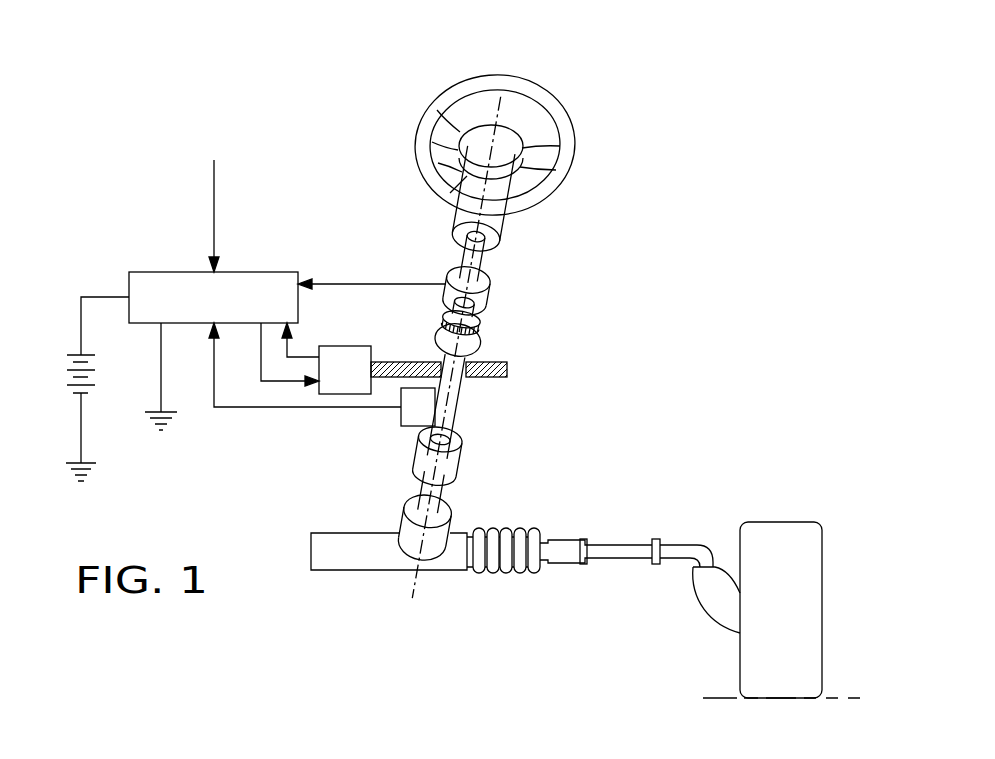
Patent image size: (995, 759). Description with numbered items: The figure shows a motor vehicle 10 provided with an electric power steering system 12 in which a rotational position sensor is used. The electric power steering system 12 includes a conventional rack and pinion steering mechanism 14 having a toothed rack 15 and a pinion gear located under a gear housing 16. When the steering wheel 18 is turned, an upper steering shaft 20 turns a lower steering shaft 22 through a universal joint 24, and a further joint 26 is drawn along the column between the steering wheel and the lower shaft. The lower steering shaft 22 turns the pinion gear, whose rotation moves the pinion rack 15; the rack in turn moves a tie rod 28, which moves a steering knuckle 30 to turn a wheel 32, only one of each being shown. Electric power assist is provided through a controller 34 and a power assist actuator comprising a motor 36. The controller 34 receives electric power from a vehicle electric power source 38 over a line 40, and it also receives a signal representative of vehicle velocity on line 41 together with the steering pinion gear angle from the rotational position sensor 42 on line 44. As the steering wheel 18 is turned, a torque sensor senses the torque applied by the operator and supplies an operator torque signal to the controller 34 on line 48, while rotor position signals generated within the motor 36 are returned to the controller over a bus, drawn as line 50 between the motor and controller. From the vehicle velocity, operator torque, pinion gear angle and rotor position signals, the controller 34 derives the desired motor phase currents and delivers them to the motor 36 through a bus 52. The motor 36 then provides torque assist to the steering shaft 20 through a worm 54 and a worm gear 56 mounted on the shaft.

The motor vehicle 10 is at (743, 360).
The electric power steering system 12 is at (656, 264).
The rack and pinion steering mechanism 14 is at (530, 525).
The toothed rack 15 is at (330, 558).
The gear housing 16 is at (405, 517).
The steering wheel 18 is at (543, 100).
The upper steering shaft 20 is at (483, 242).
The lower steering shaft 22 is at (443, 491).
The universal joint 24 is at (457, 448).
The universal joint 26 is at (487, 283).
The tie rod 28 is at (615, 562).
The steering knuckle 30 is at (712, 605).
The wheel 32 is at (798, 528).
The controller 34 is at (190, 272).
The motor 36 is at (358, 346).
The vehicle electric power source 38 is at (65, 376).
The line 40 is at (97, 297).
The line 41 is at (215, 212).
The rotational position sensor 42 is at (398, 423).
The line 44 is at (300, 408).
The line 48 is at (377, 283).
The motor feedback line 50 is at (300, 352).
The bus 52 is at (266, 383).
The worm 54 is at (505, 366).
The worm gear 56 is at (466, 330).